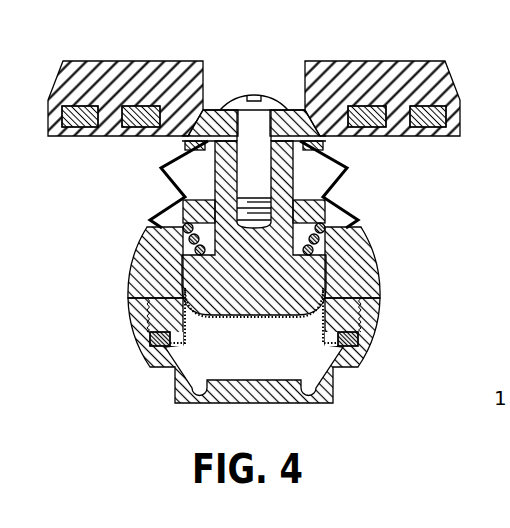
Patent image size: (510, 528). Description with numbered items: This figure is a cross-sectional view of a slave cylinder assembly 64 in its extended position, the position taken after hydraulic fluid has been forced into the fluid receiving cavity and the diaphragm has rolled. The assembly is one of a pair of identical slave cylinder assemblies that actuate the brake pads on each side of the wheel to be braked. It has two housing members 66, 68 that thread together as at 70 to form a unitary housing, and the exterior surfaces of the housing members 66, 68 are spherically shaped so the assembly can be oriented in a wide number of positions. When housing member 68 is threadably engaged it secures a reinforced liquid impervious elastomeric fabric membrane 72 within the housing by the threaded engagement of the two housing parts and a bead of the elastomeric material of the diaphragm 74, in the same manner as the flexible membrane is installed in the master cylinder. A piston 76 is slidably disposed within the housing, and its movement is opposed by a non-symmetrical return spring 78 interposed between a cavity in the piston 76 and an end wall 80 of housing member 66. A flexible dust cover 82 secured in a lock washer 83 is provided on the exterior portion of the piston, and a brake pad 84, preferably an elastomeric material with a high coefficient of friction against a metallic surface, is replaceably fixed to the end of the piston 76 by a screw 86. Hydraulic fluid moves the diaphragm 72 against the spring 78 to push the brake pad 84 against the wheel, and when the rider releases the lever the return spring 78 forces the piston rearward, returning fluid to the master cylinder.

The slave cylinder assembly 64 is at (410, 264).
The housing member 66 is at (153, 258).
The housing member 68 is at (128, 312).
The threaded connection 70 is at (362, 312).
The reinforced liquid impervious elastomeric fabric membrane 72 is at (226, 319).
The diaphragm bead 74 is at (359, 342).
The piston 76 is at (253, 298).
The non-symmetrical return spring 78 is at (327, 226).
The end wall 80 is at (325, 195).
The flexible dust cover 82 is at (182, 146).
The lock washer 83 is at (350, 148).
The brake pad 84 is at (368, 62).
The screw 86 is at (238, 101).